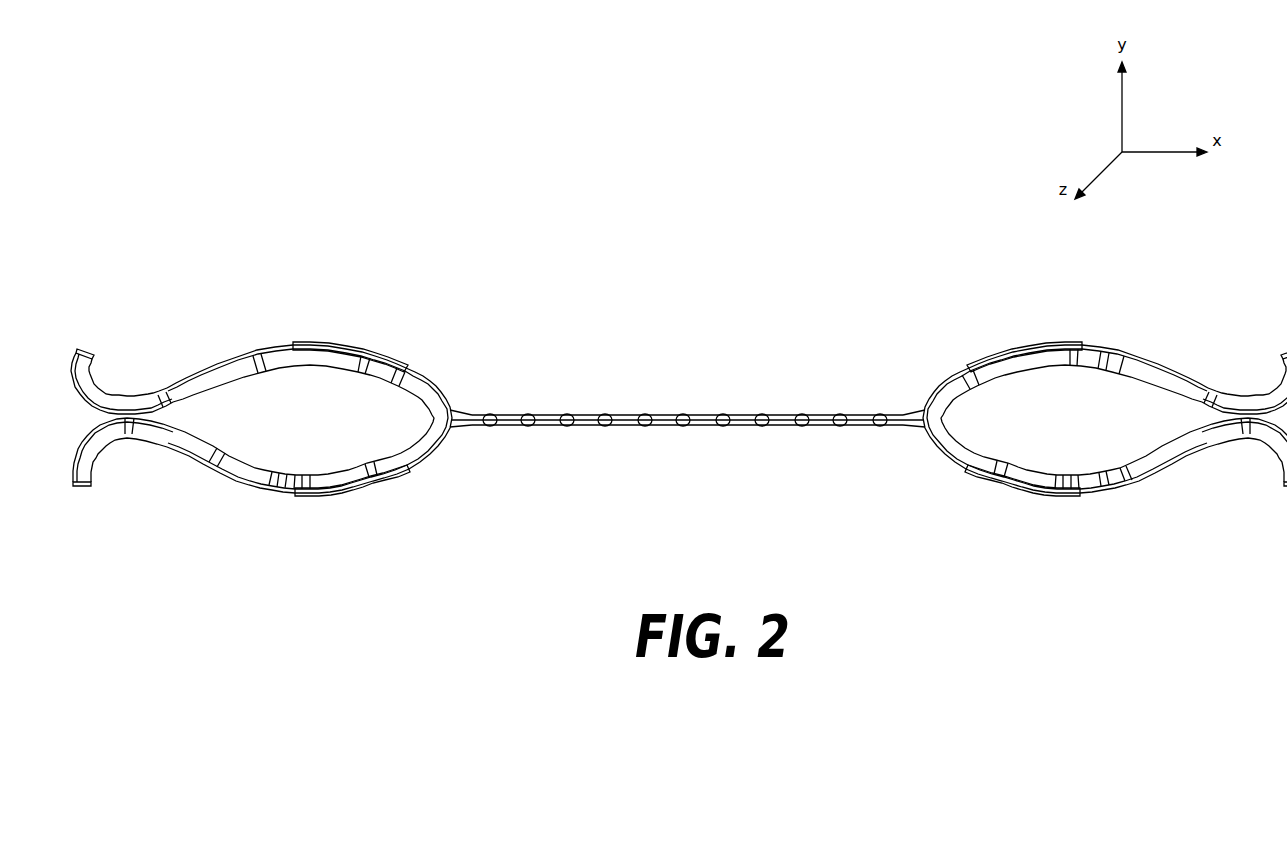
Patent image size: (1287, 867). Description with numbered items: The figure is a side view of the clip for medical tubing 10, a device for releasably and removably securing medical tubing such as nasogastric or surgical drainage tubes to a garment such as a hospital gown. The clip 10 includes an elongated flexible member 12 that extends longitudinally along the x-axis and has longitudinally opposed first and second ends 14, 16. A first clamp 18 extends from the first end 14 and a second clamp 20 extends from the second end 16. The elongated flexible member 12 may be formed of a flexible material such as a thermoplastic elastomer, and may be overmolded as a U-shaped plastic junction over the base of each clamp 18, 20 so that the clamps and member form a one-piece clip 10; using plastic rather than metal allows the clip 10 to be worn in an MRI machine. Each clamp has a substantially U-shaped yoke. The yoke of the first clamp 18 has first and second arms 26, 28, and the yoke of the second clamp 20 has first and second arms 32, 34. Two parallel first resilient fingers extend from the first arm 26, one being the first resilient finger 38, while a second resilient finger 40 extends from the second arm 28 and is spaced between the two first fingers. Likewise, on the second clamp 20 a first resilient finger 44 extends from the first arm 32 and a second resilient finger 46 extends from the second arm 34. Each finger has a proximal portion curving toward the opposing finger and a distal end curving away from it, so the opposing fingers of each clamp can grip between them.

The clip for medical tubing 10 is at (657, 299).
The elongated flexible member 12 is at (745, 414).
The first end 14 is at (464, 412).
The second end 16 is at (912, 414).
The first clamp 18 is at (305, 358).
The second clamp 20 is at (1066, 358).
The first arm 26 is at (367, 372).
The second arm 28 is at (374, 482).
The first arm 32 is at (1015, 370).
The second arm 34 is at (1039, 482).
The first resilient finger 38 is at (171, 390).
The second resilient finger 40 is at (92, 463).
The first resilient finger 44 is at (1267, 390).
The second resilient finger 46 is at (1242, 447).